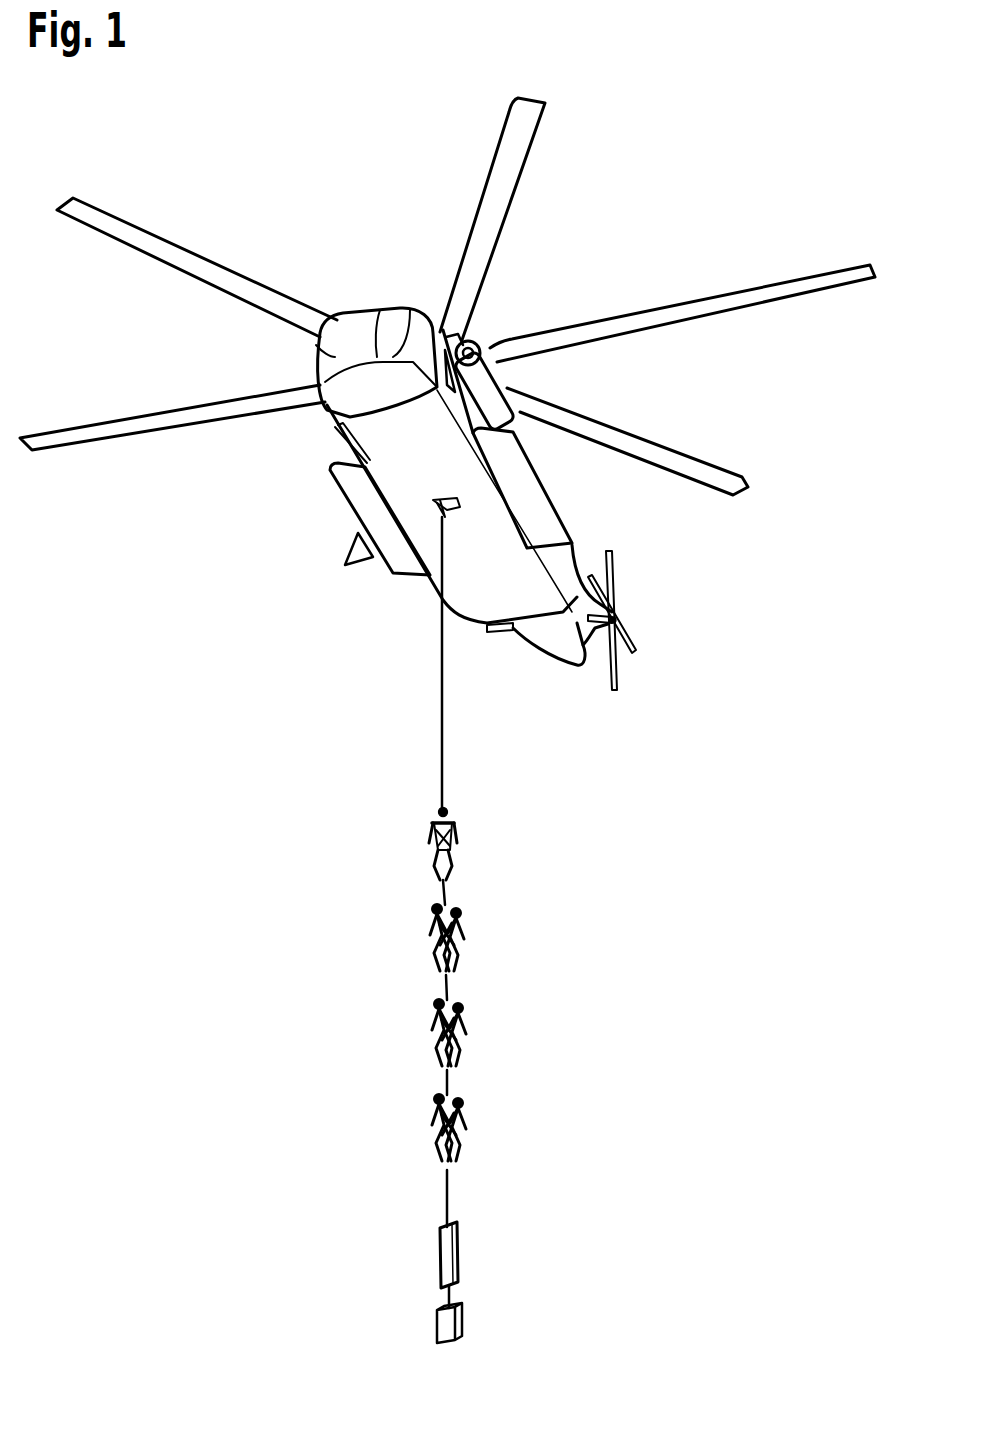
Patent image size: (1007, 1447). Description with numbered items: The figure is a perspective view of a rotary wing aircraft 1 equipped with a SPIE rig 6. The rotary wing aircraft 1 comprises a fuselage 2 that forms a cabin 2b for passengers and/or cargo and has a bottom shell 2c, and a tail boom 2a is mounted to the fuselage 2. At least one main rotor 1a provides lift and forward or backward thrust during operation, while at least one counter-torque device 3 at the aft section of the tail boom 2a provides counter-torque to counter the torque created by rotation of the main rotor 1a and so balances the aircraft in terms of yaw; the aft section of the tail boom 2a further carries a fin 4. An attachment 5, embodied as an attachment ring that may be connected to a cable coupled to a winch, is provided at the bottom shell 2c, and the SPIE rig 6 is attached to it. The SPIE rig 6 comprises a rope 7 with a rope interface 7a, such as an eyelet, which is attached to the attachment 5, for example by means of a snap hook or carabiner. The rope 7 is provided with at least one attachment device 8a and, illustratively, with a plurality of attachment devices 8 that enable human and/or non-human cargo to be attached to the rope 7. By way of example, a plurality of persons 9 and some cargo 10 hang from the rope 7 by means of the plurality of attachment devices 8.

The rotary wing aircraft 1 is at (196, 164).
The main rotor 1a is at (540, 166).
The fuselage 2 is at (330, 357).
The tail boom 2a is at (547, 633).
The cabin 2b is at (370, 292).
The bottom shell 2c is at (372, 438).
The counter-torque device 3 is at (630, 672).
The fin 4 is at (580, 586).
The attachment 5 is at (480, 506).
The SPIE rig 6 is at (426, 711).
The rope 7 is at (445, 763).
The rope interface 7a is at (422, 522).
The plurality of attachment devices 8 is at (428, 789).
The attachment device 8a is at (460, 810).
The persons 9 is at (427, 953).
The cargo 10 is at (460, 1252).